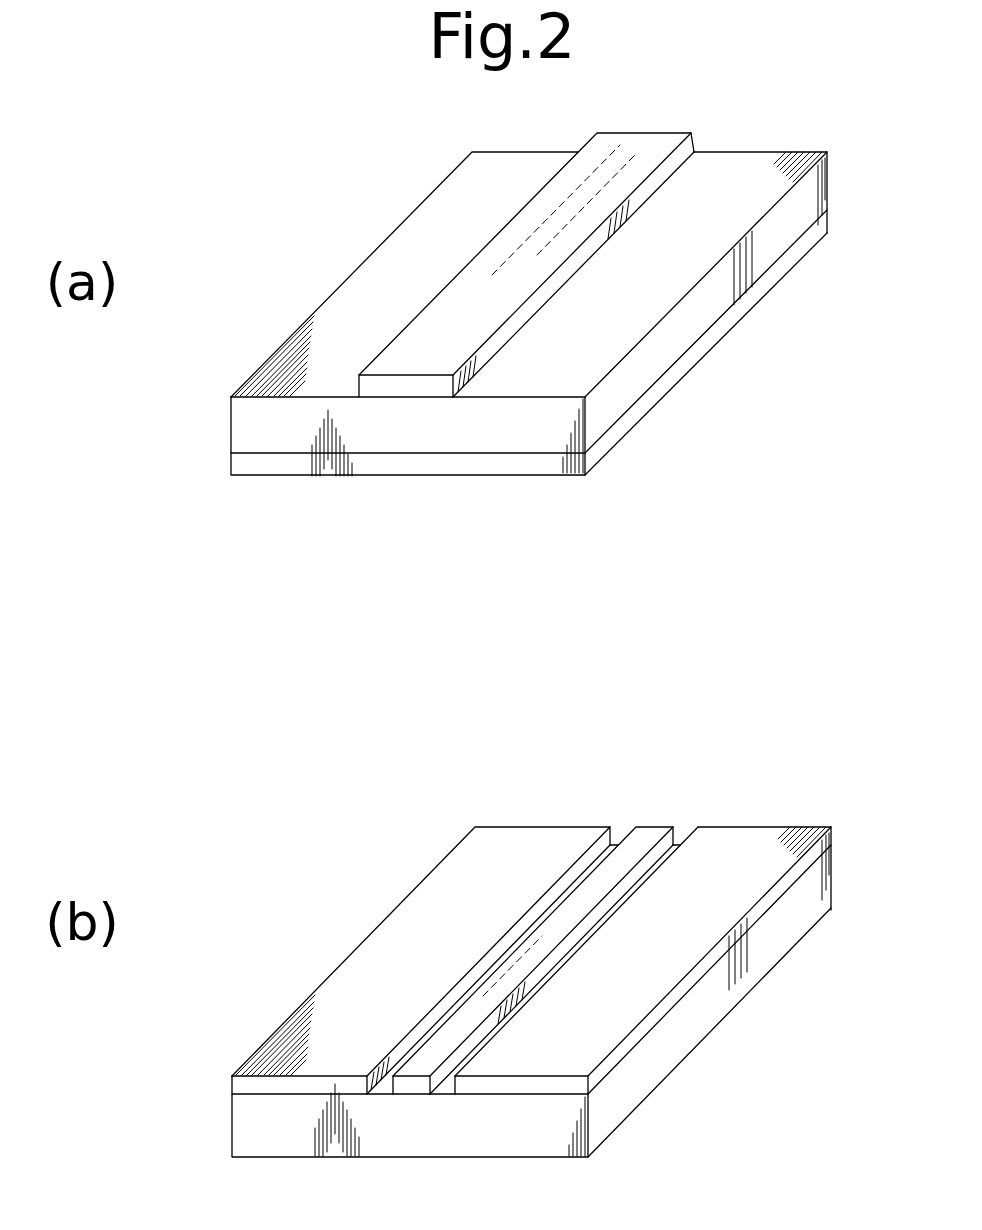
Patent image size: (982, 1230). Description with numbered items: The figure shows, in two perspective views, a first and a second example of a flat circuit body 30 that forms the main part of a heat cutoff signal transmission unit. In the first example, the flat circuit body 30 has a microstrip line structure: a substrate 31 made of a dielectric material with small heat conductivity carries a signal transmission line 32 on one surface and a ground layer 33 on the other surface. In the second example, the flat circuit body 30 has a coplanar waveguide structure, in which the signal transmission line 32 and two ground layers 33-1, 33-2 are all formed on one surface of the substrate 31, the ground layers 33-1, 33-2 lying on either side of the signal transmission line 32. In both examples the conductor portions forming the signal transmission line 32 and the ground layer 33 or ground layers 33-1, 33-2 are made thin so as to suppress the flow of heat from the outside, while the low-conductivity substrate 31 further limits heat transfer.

The flat circuit body 30 is at (300, 277).
The substrate 31 is at (243, 434).
The signal transmission line 32 is at (658, 142).
The ground layer 33 is at (680, 367).
The ground layer 33-1 is at (524, 843).
The ground layer 33-2 is at (738, 843).